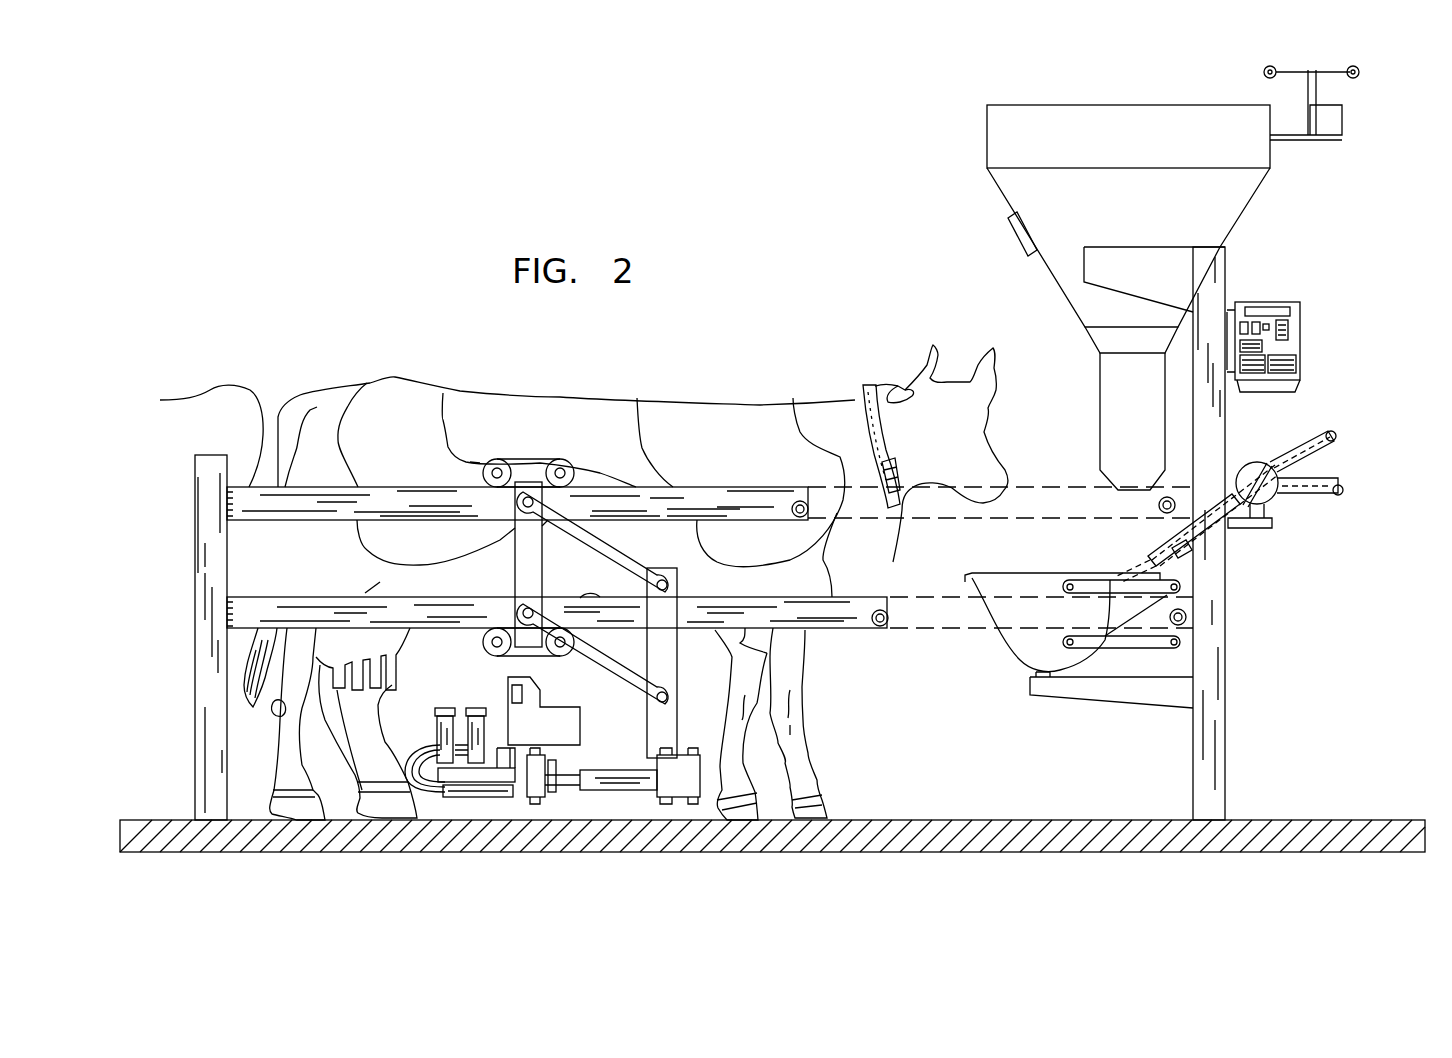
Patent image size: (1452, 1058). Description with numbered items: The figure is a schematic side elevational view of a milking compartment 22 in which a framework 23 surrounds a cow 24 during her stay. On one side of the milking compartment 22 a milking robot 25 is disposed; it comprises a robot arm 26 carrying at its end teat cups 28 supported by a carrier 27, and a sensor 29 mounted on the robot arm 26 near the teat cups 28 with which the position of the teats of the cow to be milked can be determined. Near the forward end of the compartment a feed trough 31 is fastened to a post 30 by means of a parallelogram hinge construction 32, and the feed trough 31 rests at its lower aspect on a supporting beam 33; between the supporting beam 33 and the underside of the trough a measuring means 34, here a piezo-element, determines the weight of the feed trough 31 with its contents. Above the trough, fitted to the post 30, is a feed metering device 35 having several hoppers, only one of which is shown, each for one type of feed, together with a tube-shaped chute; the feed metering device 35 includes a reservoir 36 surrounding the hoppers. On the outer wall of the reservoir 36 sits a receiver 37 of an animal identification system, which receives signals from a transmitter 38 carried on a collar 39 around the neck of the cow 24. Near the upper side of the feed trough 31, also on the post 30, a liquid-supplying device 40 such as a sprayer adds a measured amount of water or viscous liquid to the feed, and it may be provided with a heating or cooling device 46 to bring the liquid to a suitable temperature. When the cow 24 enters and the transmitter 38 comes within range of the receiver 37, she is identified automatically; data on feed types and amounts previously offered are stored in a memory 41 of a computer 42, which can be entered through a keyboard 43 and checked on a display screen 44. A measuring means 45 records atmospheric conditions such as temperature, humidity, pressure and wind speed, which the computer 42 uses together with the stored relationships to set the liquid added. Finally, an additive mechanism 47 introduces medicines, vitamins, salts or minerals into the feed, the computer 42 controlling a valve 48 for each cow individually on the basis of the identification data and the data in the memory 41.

The milking compartment 22 is at (916, 786).
The framework 23 is at (158, 402).
The cow 24 is at (400, 437).
The milking robot 25 is at (528, 797).
The robot arm 26 is at (598, 788).
The carrier 27 is at (396, 890).
The teat cups 28 is at (445, 727).
The sensor 29 is at (525, 696).
The post 30 is at (203, 786).
The feed trough 31 is at (1068, 638).
The parallelogram hinge construction 32 is at (1102, 641).
The supporting beam 33 is at (1073, 686).
The measuring means 34 is at (1035, 675).
The feed metering device 35 is at (1090, 296).
The reservoir 36 is at (1245, 185).
The receiver 37 is at (1020, 230).
The transmitter 38 is at (893, 518).
The collar 39 is at (862, 400).
The liquid-supplying device 40 is at (1322, 485).
The memory 41 is at (1285, 342).
The computer 42 is at (1320, 339).
The keyboard 43 is at (1285, 372).
The display screen 44 is at (1285, 312).
The measuring means 45 is at (1350, 112).
The heating or cooling device 46 is at (1183, 553).
The additive mechanism 47 is at (1322, 437).
The valve 48 is at (1248, 472).